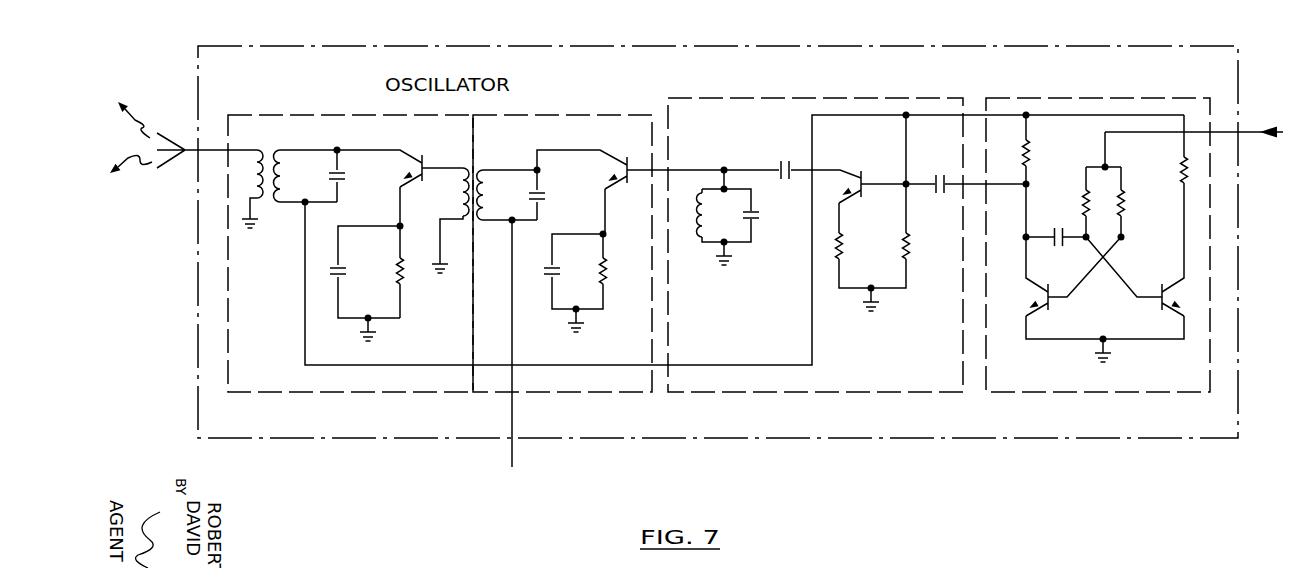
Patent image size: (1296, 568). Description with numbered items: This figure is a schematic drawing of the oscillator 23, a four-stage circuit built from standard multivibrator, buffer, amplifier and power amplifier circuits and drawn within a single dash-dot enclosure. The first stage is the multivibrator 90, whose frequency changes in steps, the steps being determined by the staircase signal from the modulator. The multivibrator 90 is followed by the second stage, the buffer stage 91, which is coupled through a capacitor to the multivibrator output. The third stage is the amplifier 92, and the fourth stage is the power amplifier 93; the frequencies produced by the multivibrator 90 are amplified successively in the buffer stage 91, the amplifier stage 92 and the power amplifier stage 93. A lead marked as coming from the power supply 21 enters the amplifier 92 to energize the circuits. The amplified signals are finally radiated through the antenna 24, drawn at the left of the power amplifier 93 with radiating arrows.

The oscillator 23 is at (1172, 423).
The antenna 24 is at (168, 140).
The power amplifier 93 is at (370, 381).
The amplifier 92 is at (568, 378).
The buffer stage 91 is at (875, 377).
The multivibrator 90 is at (1112, 375).
The power supply 21 is at (564, 375).